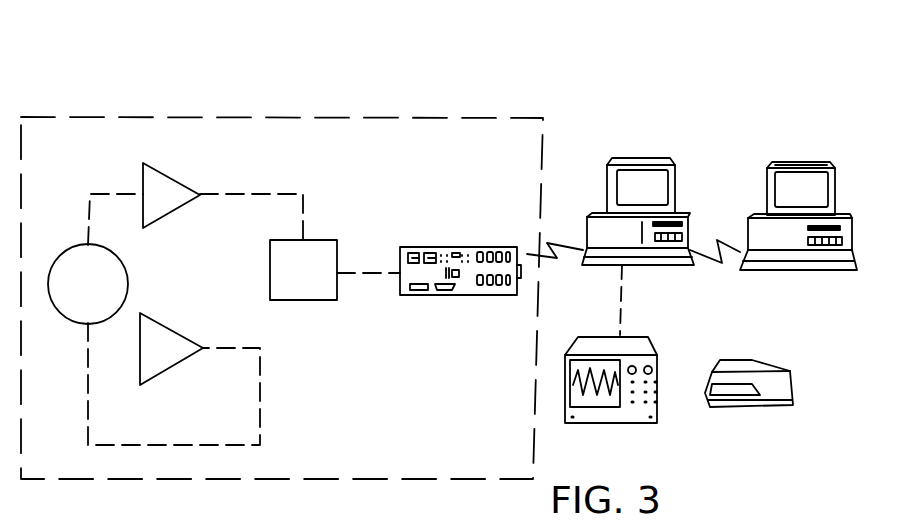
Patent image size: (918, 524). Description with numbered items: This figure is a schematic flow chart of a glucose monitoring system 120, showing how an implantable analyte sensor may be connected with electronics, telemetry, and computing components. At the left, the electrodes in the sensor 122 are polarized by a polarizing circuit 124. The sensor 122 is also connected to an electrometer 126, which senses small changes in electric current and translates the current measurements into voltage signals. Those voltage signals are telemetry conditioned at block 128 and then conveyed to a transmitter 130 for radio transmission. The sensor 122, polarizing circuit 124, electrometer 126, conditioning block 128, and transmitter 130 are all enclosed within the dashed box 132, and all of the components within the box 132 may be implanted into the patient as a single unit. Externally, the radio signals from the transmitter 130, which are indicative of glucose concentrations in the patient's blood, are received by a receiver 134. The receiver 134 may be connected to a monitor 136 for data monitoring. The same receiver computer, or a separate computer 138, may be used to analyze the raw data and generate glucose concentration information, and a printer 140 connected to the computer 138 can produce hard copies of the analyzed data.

The glucose monitoring system 120 is at (600, 95).
The sensor 122 is at (80, 258).
The polarizing circuit 124 is at (162, 338).
The electrometer 126 is at (168, 183).
The telemetry conditioning 128 is at (323, 252).
The transmitter 130 is at (477, 247).
The box 132 is at (390, 117).
The receiver 134 is at (652, 158).
The monitor 136 is at (657, 400).
The computer 138 is at (782, 160).
The printer 140 is at (795, 392).